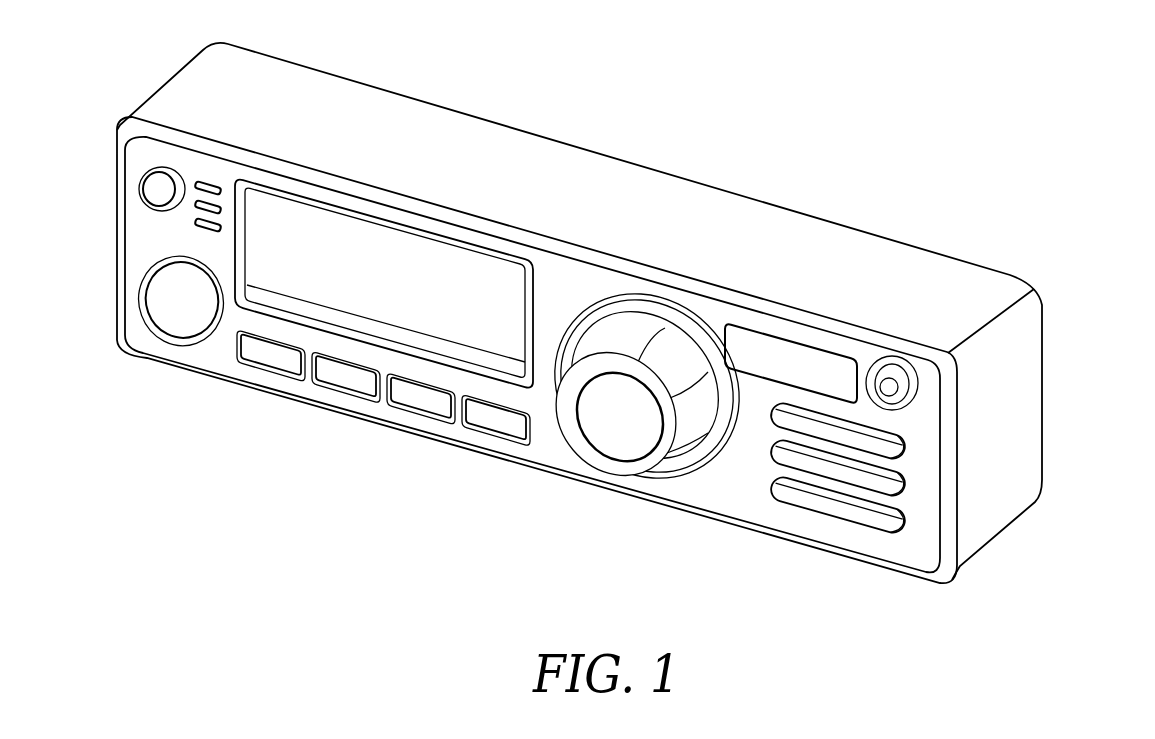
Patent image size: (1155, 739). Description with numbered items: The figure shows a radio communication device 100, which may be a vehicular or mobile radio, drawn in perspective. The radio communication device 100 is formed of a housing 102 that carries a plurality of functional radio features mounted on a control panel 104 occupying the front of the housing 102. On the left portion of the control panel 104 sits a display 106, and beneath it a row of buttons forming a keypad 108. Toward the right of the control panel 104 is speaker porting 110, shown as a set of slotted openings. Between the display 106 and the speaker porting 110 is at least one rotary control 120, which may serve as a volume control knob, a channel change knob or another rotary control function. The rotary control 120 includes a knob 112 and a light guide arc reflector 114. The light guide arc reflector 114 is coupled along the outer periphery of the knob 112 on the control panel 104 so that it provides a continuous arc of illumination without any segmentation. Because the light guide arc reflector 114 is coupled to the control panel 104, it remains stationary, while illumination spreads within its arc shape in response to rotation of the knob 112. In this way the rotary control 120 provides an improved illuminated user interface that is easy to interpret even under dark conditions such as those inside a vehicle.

The radio communication device 100 is at (1120, 637).
The housing 102 is at (1030, 408).
The control panel 104 is at (926, 556).
The display 106 is at (310, 298).
The keypad 108 is at (350, 383).
The speaker porting 110 is at (813, 512).
The knob 112 is at (617, 410).
The light guide arc reflector 114 is at (633, 305).
The rotary control 120 is at (540, 485).